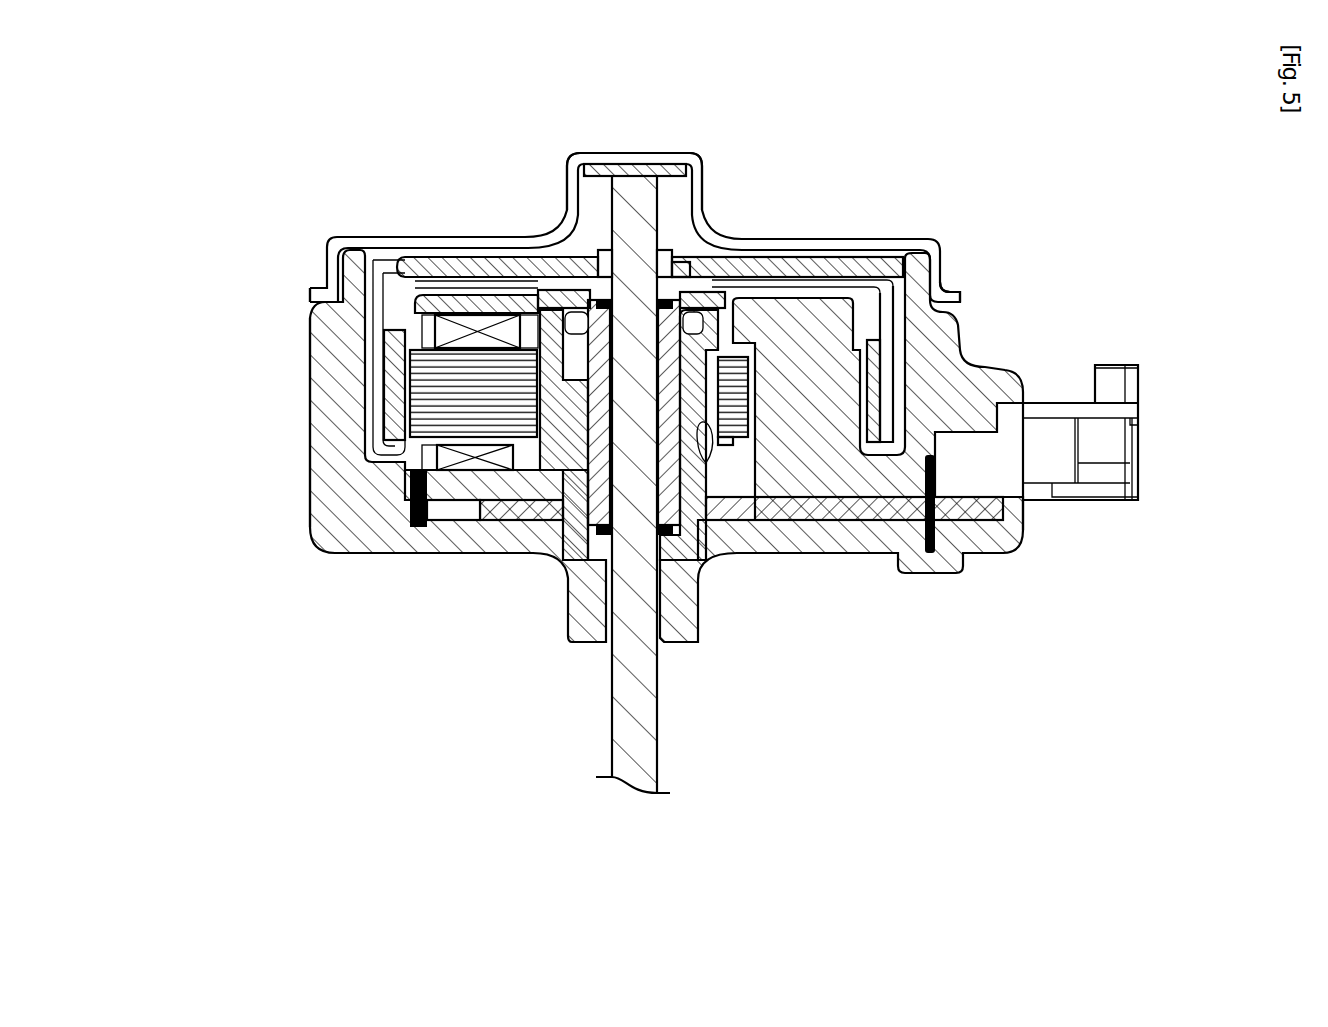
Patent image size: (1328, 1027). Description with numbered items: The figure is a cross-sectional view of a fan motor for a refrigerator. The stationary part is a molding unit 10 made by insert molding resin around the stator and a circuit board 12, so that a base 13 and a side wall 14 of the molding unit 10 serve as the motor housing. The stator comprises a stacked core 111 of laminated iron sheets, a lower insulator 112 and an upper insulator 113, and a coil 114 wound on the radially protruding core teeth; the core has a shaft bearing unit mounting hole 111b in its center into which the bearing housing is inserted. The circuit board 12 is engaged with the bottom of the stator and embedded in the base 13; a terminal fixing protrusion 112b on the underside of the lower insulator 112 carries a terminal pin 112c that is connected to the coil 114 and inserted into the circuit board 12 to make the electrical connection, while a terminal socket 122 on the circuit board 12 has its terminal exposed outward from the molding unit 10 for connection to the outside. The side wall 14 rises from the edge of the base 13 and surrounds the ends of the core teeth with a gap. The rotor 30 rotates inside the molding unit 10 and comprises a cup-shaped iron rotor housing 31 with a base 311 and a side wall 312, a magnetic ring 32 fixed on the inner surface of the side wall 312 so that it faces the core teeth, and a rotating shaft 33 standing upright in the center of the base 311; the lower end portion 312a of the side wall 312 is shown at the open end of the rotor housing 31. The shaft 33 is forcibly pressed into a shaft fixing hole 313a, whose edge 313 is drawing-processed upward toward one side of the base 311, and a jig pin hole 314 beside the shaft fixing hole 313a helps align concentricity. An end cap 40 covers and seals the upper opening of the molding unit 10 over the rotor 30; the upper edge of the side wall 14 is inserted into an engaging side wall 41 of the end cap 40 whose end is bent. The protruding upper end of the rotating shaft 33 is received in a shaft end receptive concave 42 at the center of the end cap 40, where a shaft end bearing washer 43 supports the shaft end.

The molding unit 10 is at (383, 560).
The circuit board 12 is at (508, 510).
The base 13 is at (846, 537).
The side wall 14 is at (333, 362).
The rotor 30 is at (696, 253).
The rotor housing 31 is at (800, 263).
The base 311 is at (845, 272).
The side wall 312 is at (890, 378).
The flange end 312a is at (935, 302).
The edge of the shaft fixing hole 313 is at (664, 258).
The shaft fixing hole 313a is at (648, 262).
The jig pin hole 314 is at (530, 242).
The magnetic ring 32 is at (873, 396).
The rotating shaft 33 is at (640, 688).
The end cap 40 is at (383, 233).
The engaging side wall 41 is at (335, 279).
The shaft end receptive concave 42 is at (608, 153).
The shaft end bearing washer 43 is at (628, 170).
The stacked core 111 is at (432, 409).
The shaft bearing unit mounting hole 111b is at (706, 463).
The lower insulator 112 is at (470, 440).
The terminal fixing protrusion 112b is at (410, 473).
The terminal pin 112c is at (410, 512).
The upper insulator 113 is at (473, 348).
The coil 114 is at (491, 322).
The terminal socket 122 is at (1140, 457).